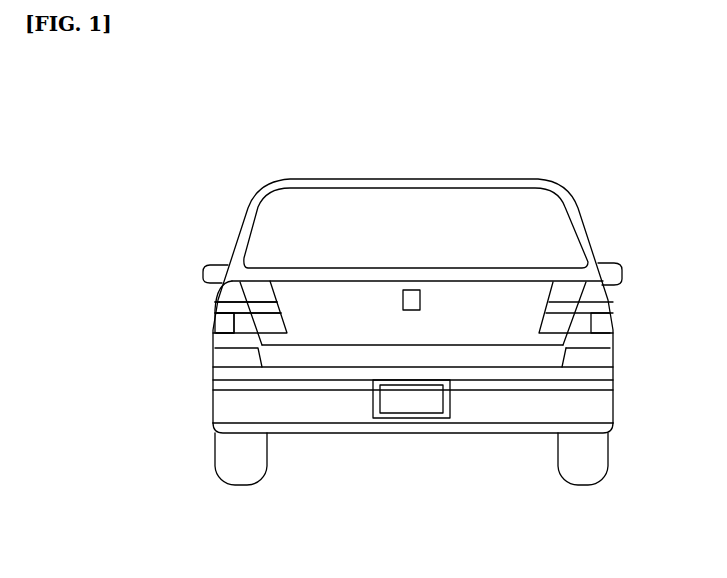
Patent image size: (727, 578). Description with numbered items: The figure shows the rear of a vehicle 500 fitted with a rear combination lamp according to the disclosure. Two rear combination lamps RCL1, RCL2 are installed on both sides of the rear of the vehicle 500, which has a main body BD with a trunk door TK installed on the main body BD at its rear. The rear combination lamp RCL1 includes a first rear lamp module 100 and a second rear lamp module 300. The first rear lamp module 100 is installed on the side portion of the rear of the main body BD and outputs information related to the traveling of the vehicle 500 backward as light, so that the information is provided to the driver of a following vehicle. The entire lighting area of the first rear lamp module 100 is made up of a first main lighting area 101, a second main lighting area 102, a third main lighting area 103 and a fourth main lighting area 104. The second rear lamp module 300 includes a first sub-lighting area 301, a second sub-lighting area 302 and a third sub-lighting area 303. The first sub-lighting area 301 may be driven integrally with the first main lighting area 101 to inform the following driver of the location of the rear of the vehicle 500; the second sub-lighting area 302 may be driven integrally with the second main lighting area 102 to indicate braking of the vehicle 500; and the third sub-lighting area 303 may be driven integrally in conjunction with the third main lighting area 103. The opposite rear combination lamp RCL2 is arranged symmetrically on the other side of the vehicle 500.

The rear combination lamp RCL1 is at (232, 234).
The rear combination lamp RCL2 is at (605, 247).
The first rear lamp module 100 is at (232, 234).
The first main lighting area 101 is at (236, 292).
The second main lighting area 102 is at (232, 308).
The third main lighting area 103 is at (222, 322).
The fourth main lighting area 104 is at (243, 328).
The second rear lamp module 300 is at (315, 207).
The first sub-lighting area 301 is at (262, 296).
The second sub-lighting area 302 is at (273, 309).
The third sub-lighting area 303 is at (274, 330).
The vehicle 500 is at (412, 364).
The main body BD is at (367, 405).
The trunk door TK is at (478, 323).